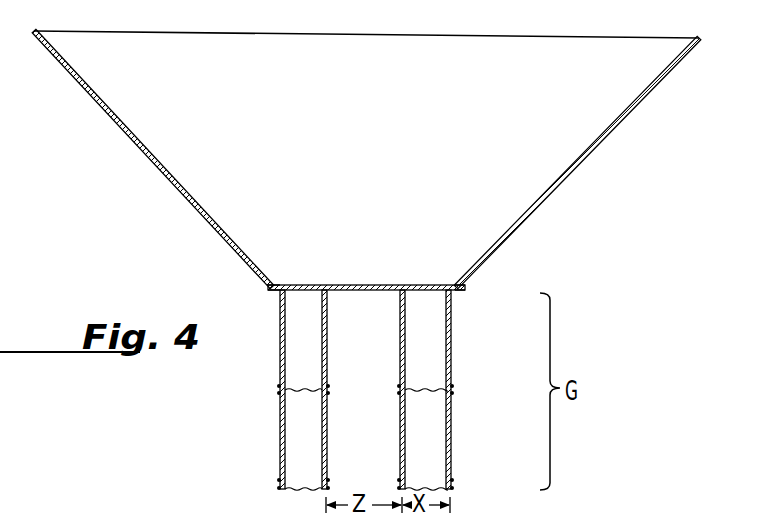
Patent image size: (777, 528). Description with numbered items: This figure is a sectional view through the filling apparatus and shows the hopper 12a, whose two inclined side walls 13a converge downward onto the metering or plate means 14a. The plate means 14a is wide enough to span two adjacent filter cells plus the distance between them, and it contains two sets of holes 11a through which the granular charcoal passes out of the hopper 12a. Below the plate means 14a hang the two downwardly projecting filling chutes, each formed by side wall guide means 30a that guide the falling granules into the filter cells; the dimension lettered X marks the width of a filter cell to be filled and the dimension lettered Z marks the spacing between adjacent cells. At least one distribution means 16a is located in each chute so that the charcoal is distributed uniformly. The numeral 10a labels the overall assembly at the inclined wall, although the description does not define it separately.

The hopper 10a is at (369, 158).
The holes 11a is at (300, 284).
The hopper 12a is at (535, 152).
The side walls 13a is at (383, 158).
The metering or plate means 14a is at (363, 285).
The distribution means 16a is at (298, 390).
The side wall guide means 30a is at (322, 335).